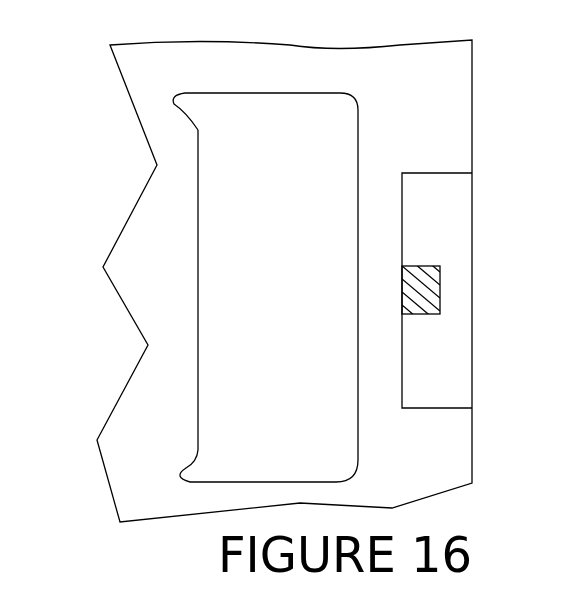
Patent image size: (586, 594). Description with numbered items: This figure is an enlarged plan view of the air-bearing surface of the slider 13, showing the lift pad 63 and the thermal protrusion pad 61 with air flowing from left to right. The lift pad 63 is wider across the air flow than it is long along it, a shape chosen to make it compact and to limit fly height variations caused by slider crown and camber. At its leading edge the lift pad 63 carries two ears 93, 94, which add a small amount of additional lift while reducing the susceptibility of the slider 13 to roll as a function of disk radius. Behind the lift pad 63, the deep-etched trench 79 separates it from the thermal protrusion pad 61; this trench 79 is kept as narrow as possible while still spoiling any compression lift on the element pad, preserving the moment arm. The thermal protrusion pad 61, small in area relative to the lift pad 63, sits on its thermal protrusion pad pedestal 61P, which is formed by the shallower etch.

The slider 13 is at (108, 190).
The lift pad 63 is at (205, 408).
The leading edge ear 93 is at (192, 108).
The leading edge ear 94 is at (193, 470).
The trench 79 is at (375, 258).
The thermal protrusion pad pedestal 61P is at (467, 208).
The thermal protrusion pad 61 is at (432, 288).